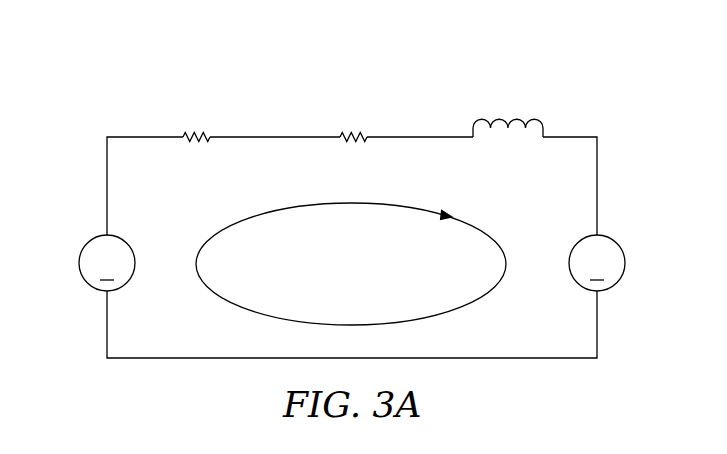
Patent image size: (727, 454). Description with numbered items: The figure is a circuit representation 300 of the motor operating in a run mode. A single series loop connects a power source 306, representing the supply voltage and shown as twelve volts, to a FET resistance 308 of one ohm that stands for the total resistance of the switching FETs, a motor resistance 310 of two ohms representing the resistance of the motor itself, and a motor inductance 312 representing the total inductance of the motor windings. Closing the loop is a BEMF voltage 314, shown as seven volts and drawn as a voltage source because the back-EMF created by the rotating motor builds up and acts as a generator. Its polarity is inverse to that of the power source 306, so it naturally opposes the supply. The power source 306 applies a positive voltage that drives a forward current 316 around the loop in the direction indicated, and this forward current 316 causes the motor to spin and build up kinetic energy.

The circuit representation 300 is at (268, 68).
The power source 306 is at (119, 287).
The FET resistance 308 is at (197, 143).
The motor resistance 310 is at (346, 142).
The motor inductance 312 is at (517, 128).
The BEMF voltage 314 is at (578, 284).
The forward current 316 is at (228, 305).